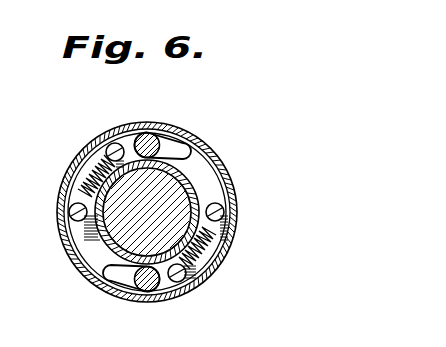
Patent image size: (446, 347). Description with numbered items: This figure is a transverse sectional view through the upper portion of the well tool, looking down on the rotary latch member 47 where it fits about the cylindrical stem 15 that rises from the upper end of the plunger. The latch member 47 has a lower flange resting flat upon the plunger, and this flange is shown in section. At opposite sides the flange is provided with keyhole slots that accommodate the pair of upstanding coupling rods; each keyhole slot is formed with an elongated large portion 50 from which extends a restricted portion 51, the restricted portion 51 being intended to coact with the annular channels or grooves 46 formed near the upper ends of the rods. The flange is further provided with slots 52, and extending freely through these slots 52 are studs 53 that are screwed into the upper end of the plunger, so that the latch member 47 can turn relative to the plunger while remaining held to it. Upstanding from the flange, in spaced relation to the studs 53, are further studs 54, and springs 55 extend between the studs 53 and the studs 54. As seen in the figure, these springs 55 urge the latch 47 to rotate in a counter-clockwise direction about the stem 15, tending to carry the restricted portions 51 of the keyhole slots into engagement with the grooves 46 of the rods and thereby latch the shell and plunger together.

The cylindrical stem 15 is at (150, 208).
The annular channels or grooves 46 is at (217, 188).
The rotary latch member 47 is at (105, 237).
The elongated large portions 50 is at (158, 134).
The restricted portions 51 is at (204, 182).
The slots 52 is at (75, 172).
The studs 53 is at (69, 213).
The studs 54 is at (116, 143).
The springs 55 is at (218, 272).